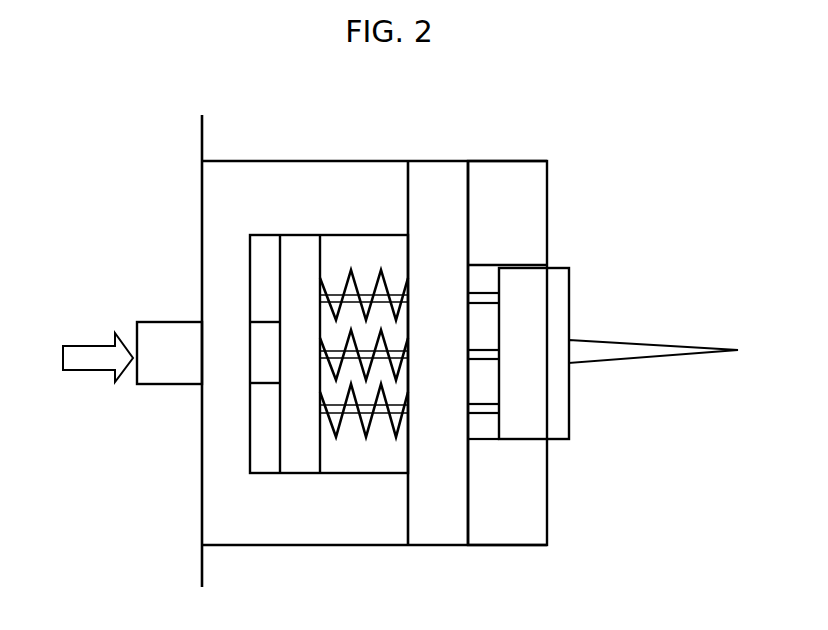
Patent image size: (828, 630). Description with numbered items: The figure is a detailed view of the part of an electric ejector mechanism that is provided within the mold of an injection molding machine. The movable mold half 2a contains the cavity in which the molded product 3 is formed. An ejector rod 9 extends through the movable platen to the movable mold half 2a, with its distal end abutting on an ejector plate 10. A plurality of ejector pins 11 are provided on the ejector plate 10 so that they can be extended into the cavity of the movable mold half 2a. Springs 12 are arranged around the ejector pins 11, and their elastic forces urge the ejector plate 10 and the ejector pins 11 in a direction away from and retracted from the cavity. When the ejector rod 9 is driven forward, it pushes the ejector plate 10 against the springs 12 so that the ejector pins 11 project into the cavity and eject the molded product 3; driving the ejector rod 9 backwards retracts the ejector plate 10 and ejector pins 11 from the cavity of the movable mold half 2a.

The ejector rod 9 is at (175, 322).
The ejector plate 10 is at (305, 467).
The ejector pins 11 is at (480, 408).
The springs 12 is at (358, 277).
The movable mold half 2a is at (489, 165).
The molded product 3 is at (563, 313).